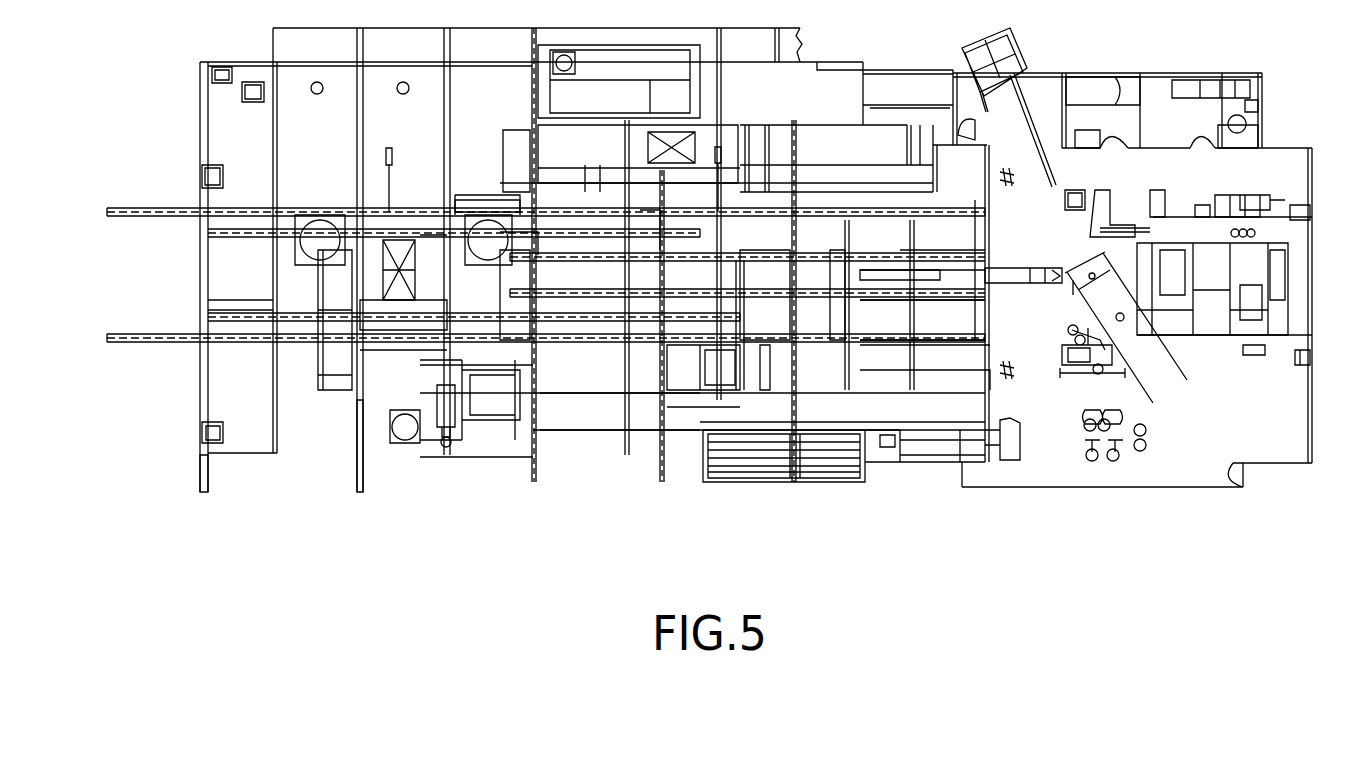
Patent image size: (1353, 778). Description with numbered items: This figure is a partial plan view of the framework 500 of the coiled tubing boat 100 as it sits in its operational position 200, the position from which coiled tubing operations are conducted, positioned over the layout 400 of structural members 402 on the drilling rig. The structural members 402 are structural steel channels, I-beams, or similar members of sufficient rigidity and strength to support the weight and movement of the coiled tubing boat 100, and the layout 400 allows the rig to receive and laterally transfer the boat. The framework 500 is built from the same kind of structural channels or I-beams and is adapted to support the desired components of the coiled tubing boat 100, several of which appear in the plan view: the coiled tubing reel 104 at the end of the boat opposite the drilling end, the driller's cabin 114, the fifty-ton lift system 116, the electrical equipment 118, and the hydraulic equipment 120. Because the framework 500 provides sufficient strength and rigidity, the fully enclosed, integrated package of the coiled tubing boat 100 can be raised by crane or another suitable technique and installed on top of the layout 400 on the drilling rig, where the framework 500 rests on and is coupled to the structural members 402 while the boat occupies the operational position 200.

The coiled tubing boat 100 is at (580, 407).
The coiled tubing reel 104 is at (460, 208).
The driller's cabin 114 is at (873, 372).
The 50-ton lift system 116 is at (452, 392).
The electrical equipment 118 is at (735, 358).
The hydraulic equipment 120 is at (340, 320).
The operational position 200 is at (313, 378).
The layout 400 is at (197, 497).
The structural members 402 is at (158, 208).
The framework 500 is at (323, 403).